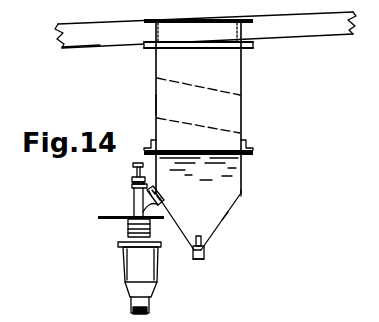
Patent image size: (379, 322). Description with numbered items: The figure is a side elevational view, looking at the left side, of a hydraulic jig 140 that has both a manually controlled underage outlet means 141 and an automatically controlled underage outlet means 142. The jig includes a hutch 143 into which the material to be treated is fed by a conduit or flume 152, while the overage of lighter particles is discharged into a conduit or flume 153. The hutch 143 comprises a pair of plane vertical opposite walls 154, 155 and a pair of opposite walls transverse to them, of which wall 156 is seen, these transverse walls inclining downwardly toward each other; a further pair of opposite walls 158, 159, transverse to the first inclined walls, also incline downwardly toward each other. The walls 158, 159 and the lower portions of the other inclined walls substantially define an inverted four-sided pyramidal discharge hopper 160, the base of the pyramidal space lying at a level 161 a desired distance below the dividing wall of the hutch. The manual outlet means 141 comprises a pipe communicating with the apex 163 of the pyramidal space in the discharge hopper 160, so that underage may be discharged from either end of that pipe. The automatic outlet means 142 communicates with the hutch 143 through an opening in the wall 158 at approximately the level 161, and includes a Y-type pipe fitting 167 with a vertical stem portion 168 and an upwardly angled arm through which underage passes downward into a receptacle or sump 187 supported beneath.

The hydraulic jig 140 is at (288, 145).
The manually controlled underage outlet means 141 is at (205, 258).
The automatically controlled underage outlet means 142 is at (121, 269).
The hutch 143 is at (243, 97).
The conduit or flume 152 is at (317, 29).
The conduit or flume 153 is at (84, 38).
The plane vertical wall 154 is at (155, 103).
The plane vertical wall 155 is at (242, 127).
The inclined wall 156 is at (229, 173).
The inclined wall 158 is at (191, 252).
The inclined wall 159 is at (225, 225).
The inverted four-sided pyramidal discharge hopper 160 is at (231, 210).
The level 161 is at (243, 193).
The apex 163 is at (194, 258).
The pipe fitting 167 is at (132, 203).
The vertical stem portion 168 is at (130, 230).
The receptacle or sump 187 is at (125, 287).